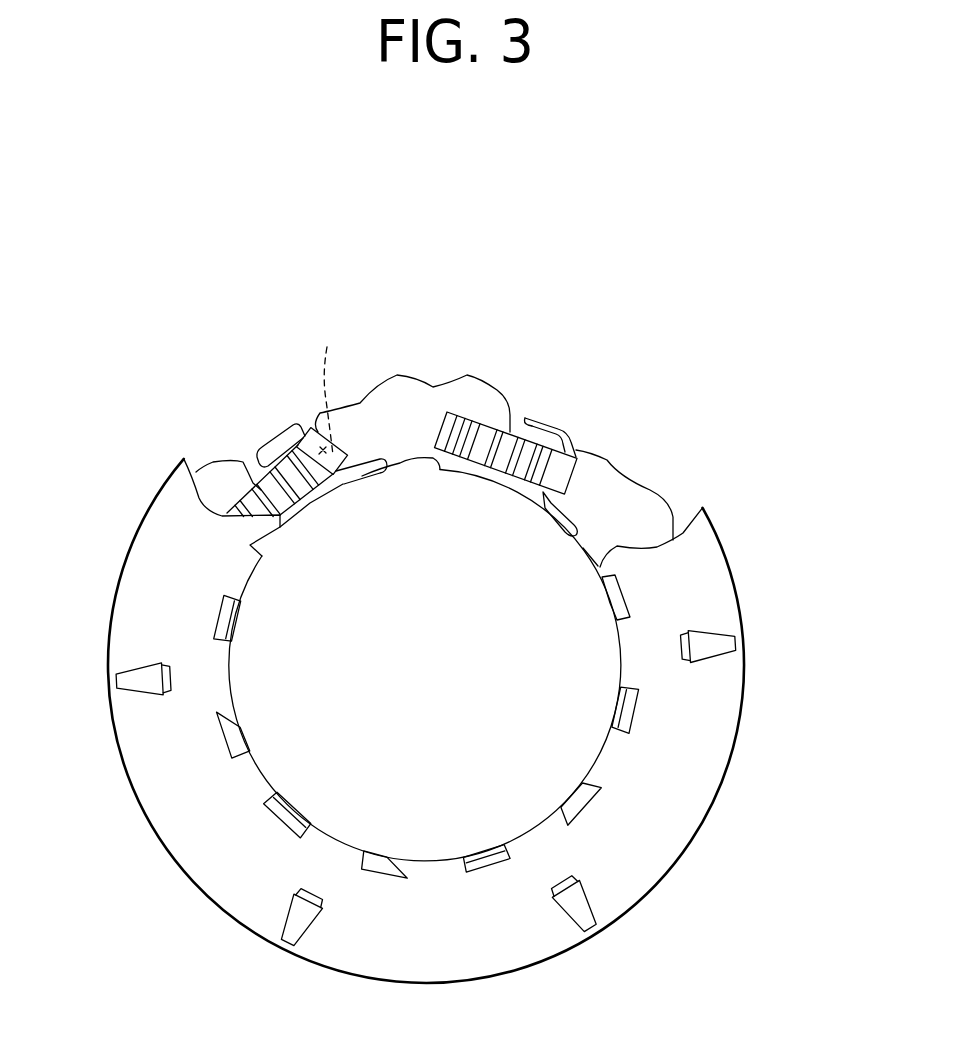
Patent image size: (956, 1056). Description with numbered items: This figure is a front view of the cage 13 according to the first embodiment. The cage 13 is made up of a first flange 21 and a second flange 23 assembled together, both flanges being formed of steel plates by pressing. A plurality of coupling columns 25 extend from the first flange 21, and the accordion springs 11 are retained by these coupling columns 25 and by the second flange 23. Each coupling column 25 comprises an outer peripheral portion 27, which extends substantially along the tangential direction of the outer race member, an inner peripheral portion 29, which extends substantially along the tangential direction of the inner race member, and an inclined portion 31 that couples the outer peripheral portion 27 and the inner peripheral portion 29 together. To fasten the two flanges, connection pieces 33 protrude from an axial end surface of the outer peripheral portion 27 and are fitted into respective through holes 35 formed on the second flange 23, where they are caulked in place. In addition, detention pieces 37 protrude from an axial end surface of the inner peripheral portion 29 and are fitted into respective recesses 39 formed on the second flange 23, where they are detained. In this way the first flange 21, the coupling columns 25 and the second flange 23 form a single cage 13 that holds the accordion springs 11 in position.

The accordion spring 11 is at (495, 416).
The cage 13 is at (462, 647).
The first flange 21 is at (410, 373).
The second flange 23 is at (753, 605).
The coupling column 25 is at (574, 425).
The outer peripheral portion 27 is at (278, 452).
The inner peripheral portion 29 is at (366, 476).
The inclined portion 31 is at (336, 384).
The connection piece 33 is at (713, 656).
The through hole 35 is at (682, 655).
The detention piece 37 is at (487, 853).
The recess 39 is at (462, 864).